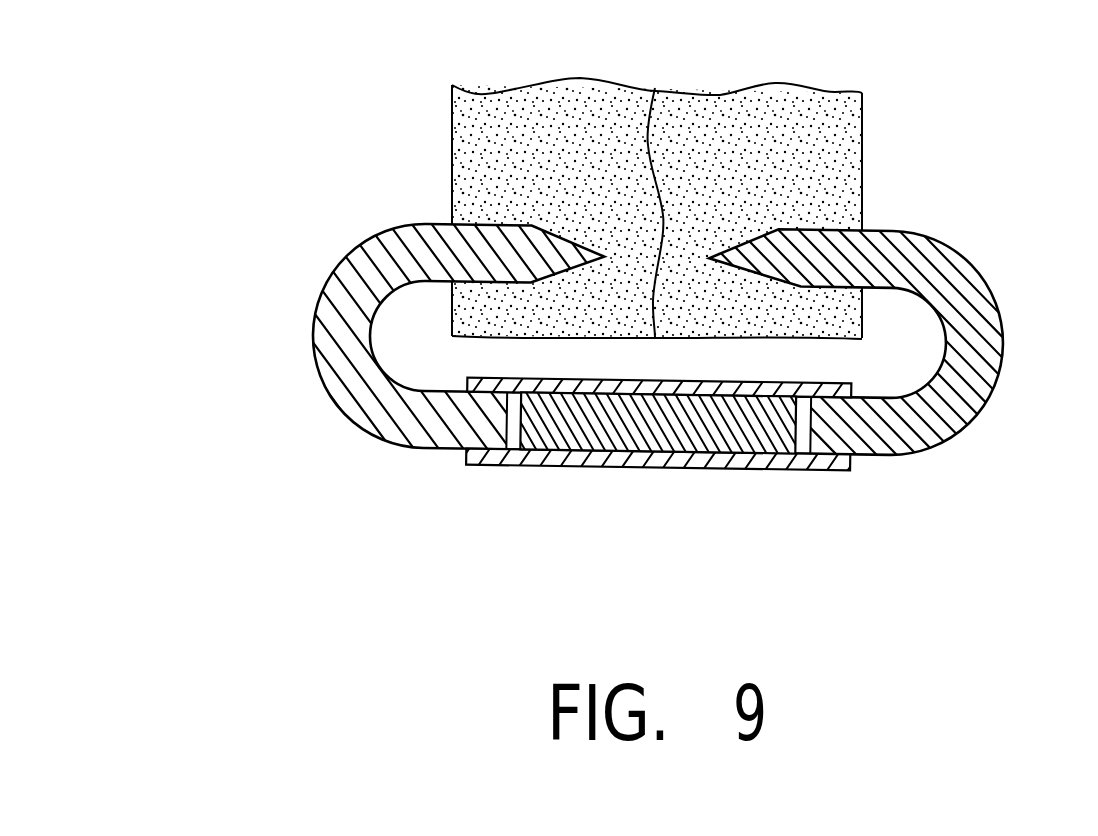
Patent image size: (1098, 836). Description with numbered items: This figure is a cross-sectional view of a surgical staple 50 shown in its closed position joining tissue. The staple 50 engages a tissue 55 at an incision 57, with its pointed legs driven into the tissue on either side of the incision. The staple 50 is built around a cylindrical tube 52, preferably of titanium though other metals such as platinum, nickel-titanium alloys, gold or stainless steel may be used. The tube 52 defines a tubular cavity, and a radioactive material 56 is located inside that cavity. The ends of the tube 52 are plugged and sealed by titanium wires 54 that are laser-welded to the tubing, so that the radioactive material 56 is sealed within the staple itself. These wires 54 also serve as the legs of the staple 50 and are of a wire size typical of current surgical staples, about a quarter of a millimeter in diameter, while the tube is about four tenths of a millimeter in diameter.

The staple 50 is at (626, 348).
The cylindrical tube 52 is at (765, 470).
The titanium wires 54 is at (357, 428).
The tissue 55 is at (542, 157).
The radioactive material 56 is at (597, 445).
The incision 57 is at (650, 138).